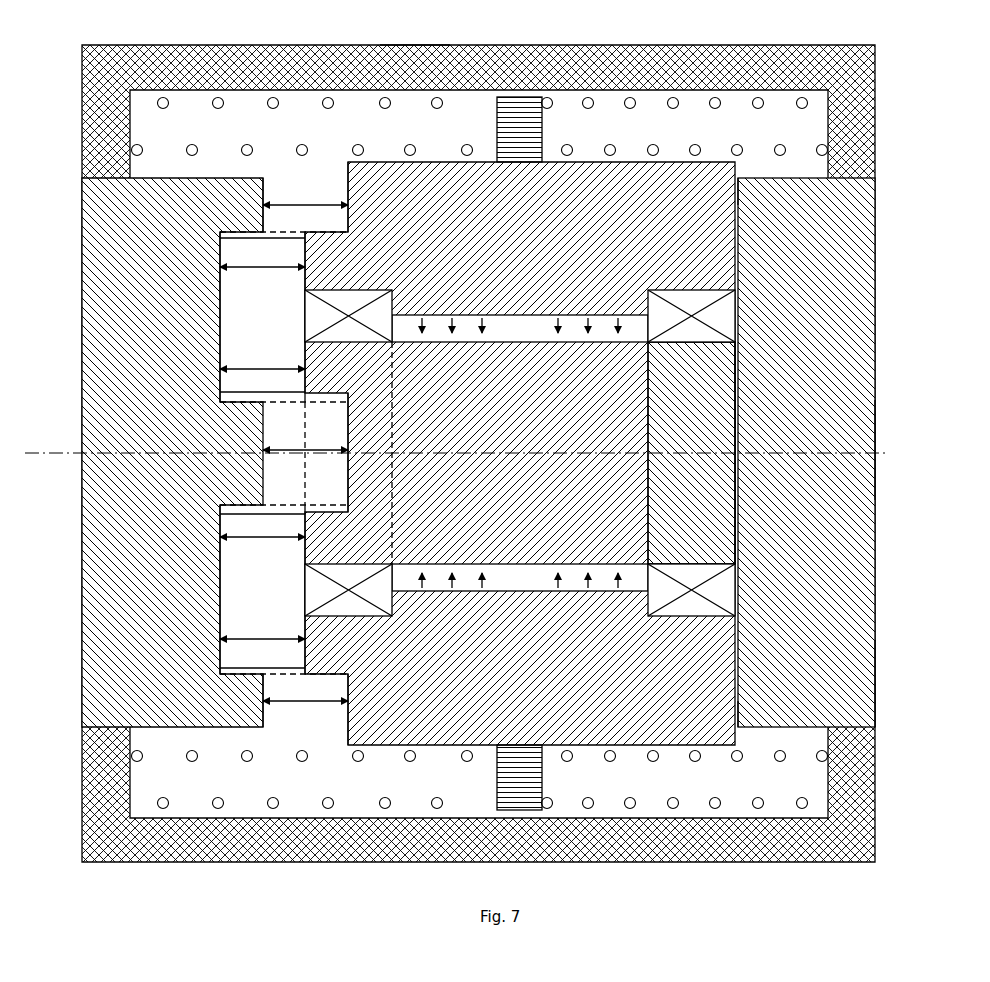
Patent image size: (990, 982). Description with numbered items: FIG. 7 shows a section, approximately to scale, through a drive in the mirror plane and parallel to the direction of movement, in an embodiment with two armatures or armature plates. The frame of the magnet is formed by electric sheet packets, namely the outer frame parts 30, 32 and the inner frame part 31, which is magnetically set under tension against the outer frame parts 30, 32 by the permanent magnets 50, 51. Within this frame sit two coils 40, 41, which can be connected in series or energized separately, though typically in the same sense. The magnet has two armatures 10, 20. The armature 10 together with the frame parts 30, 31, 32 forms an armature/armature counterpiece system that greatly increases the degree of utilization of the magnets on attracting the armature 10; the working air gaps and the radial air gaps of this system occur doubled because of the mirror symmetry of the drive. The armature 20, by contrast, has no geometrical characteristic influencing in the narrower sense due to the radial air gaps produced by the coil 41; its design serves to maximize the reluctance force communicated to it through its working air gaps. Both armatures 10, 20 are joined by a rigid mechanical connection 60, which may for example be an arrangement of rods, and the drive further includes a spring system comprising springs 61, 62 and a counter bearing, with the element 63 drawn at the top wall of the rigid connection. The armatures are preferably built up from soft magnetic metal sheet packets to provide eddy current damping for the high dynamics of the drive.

The armature 10 is at (175, 440).
The armature 20 is at (777, 470).
The outer frame part 30 is at (690, 240).
The inner frame part 31 is at (660, 432).
The outer frame part 32 is at (700, 666).
The coil 40 is at (305, 318).
The coil 41 is at (690, 318).
The permanent magnet 50 is at (497, 328).
The permanent magnet 51 is at (550, 585).
The rigid mechanical connection 60 is at (705, 64).
The spring 61 is at (520, 105).
The spring 62 is at (617, 100).
The frame top wall 63 is at (425, 100).